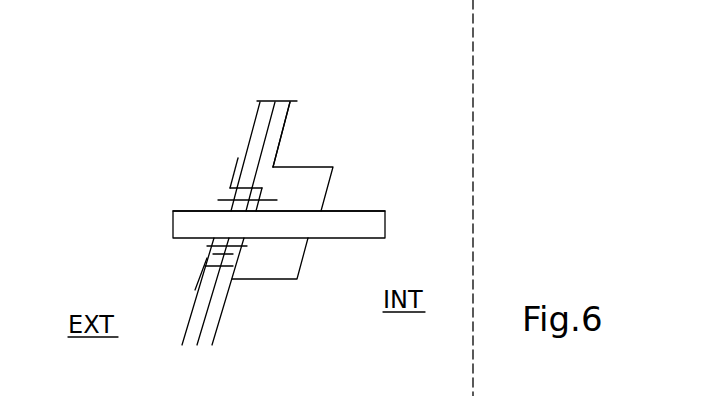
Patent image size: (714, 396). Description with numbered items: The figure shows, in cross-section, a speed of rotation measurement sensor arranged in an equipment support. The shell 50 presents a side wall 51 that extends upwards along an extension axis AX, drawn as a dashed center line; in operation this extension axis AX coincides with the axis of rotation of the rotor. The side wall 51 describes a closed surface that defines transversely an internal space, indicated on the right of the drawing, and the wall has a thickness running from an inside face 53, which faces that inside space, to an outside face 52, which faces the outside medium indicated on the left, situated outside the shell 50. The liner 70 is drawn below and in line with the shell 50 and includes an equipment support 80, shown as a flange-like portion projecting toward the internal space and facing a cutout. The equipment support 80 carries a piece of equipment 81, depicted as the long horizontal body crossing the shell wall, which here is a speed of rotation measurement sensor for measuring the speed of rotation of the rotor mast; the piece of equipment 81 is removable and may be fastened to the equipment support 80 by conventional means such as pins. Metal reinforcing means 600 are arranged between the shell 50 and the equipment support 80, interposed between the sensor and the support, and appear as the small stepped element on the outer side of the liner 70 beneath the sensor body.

The extension axis AX is at (475, 98).
The shell 50 is at (218, 136).
The side wall 51 is at (253, 122).
The outside face 52 is at (247, 138).
The inside face 53 is at (275, 124).
The equipment support 80 is at (328, 190).
The piece of equipment 81 is at (224, 210).
The liner 70 is at (222, 318).
The metal reinforcing means 600 is at (195, 269).